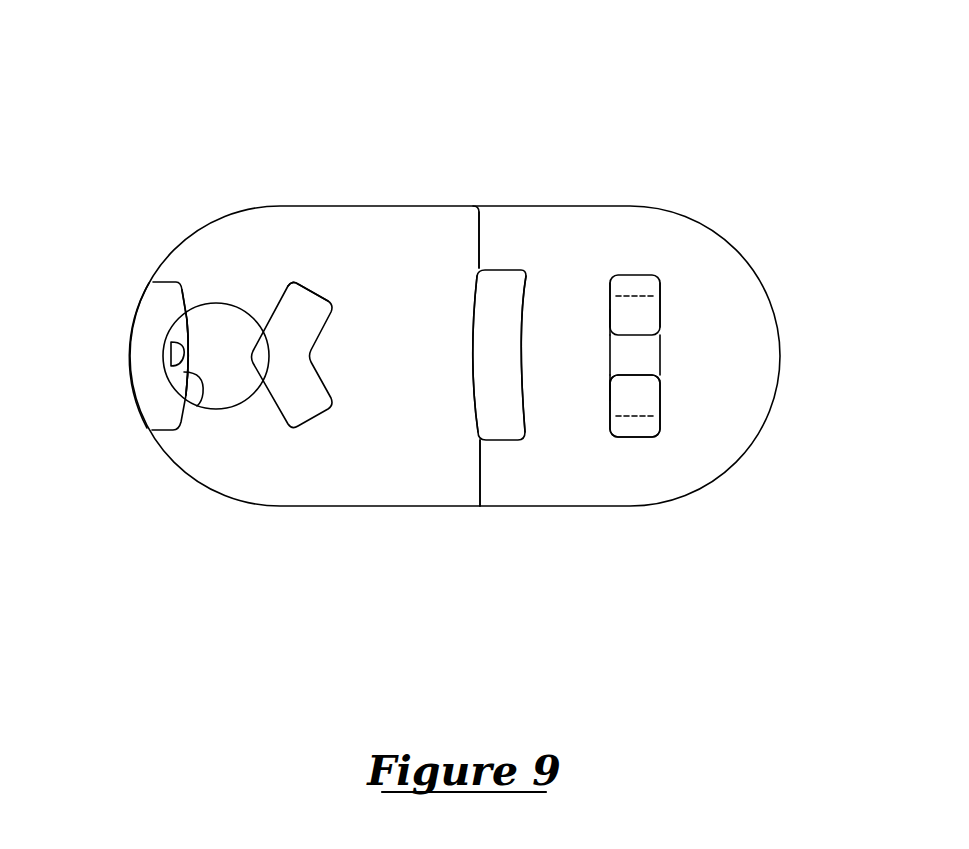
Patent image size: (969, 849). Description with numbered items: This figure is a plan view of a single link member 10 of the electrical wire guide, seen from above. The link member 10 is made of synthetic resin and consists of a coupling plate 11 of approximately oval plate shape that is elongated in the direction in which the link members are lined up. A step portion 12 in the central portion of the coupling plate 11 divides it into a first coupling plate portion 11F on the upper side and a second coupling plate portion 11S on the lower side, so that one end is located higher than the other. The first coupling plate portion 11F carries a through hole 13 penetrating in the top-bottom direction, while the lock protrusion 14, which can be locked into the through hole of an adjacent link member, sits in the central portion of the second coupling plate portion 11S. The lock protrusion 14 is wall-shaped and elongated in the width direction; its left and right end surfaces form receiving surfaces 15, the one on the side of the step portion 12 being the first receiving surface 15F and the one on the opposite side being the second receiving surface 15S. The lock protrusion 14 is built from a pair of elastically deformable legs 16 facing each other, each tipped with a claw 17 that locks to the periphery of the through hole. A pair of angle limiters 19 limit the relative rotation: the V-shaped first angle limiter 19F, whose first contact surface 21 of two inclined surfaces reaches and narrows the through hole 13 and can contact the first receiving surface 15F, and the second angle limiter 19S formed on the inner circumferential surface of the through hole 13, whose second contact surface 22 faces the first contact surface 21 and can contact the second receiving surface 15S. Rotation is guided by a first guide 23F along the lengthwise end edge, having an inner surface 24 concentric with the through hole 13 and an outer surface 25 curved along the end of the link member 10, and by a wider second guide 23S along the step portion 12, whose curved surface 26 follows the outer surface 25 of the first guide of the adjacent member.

The link member 10 is at (418, 93).
The coupling plate 11 is at (447, 119).
The first coupling plate portion 11F is at (376, 232).
The second coupling plate portion 11S is at (558, 236).
The step portion 12 is at (467, 488).
The through hole 13 is at (225, 397).
The lock protrusion 14 is at (643, 322).
The receiving surfaces 15 is at (695, 142).
The first receiving surface 15F is at (610, 314).
The second receiving surface 15S is at (660, 314).
The legs 16 is at (619, 323).
The claw 17 is at (640, 427).
The angle limiters 19 is at (290, 143).
The second angle limiter 19S is at (182, 350).
The first angle limiter 19F is at (295, 307).
The first contact surface 21 is at (275, 402).
The second contact surface 22 is at (198, 402).
The first guide 23F is at (147, 314).
The second guide 23S is at (482, 368).
The inner surface 24 is at (177, 362).
The outer surface 25 is at (130, 344).
The curved surface 26 is at (518, 362).